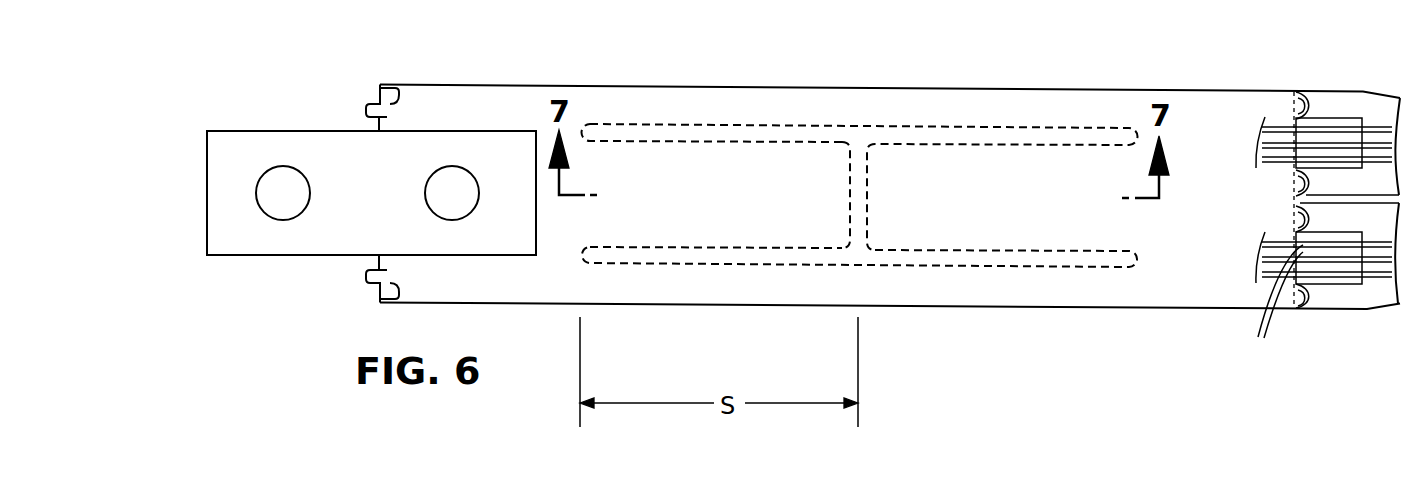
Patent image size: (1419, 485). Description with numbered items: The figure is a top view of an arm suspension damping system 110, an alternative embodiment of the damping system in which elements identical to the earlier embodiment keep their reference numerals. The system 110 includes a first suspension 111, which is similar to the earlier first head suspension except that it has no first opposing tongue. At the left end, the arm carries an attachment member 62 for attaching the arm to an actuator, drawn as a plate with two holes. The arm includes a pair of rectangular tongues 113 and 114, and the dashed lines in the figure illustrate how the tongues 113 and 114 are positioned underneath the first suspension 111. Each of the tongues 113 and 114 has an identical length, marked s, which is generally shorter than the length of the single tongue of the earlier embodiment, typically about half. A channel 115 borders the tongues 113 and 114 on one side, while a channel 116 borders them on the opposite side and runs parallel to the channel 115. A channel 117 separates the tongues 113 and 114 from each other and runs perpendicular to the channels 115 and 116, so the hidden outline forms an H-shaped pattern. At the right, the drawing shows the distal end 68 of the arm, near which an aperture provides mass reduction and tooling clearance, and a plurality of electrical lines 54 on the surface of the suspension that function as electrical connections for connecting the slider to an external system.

The electrical lines 54 is at (1267, 313).
The attachment member 62 is at (382, 210).
The distal end 68 is at (1292, 90).
The arm suspension damping system 110 is at (945, 89).
The first suspension 111 is at (742, 305).
The rectangular tongue 113 is at (714, 160).
The rectangular tongue 114 is at (905, 230).
The channel 115 is at (811, 134).
The channel 116 is at (1025, 257).
The channel 117 is at (858, 237).